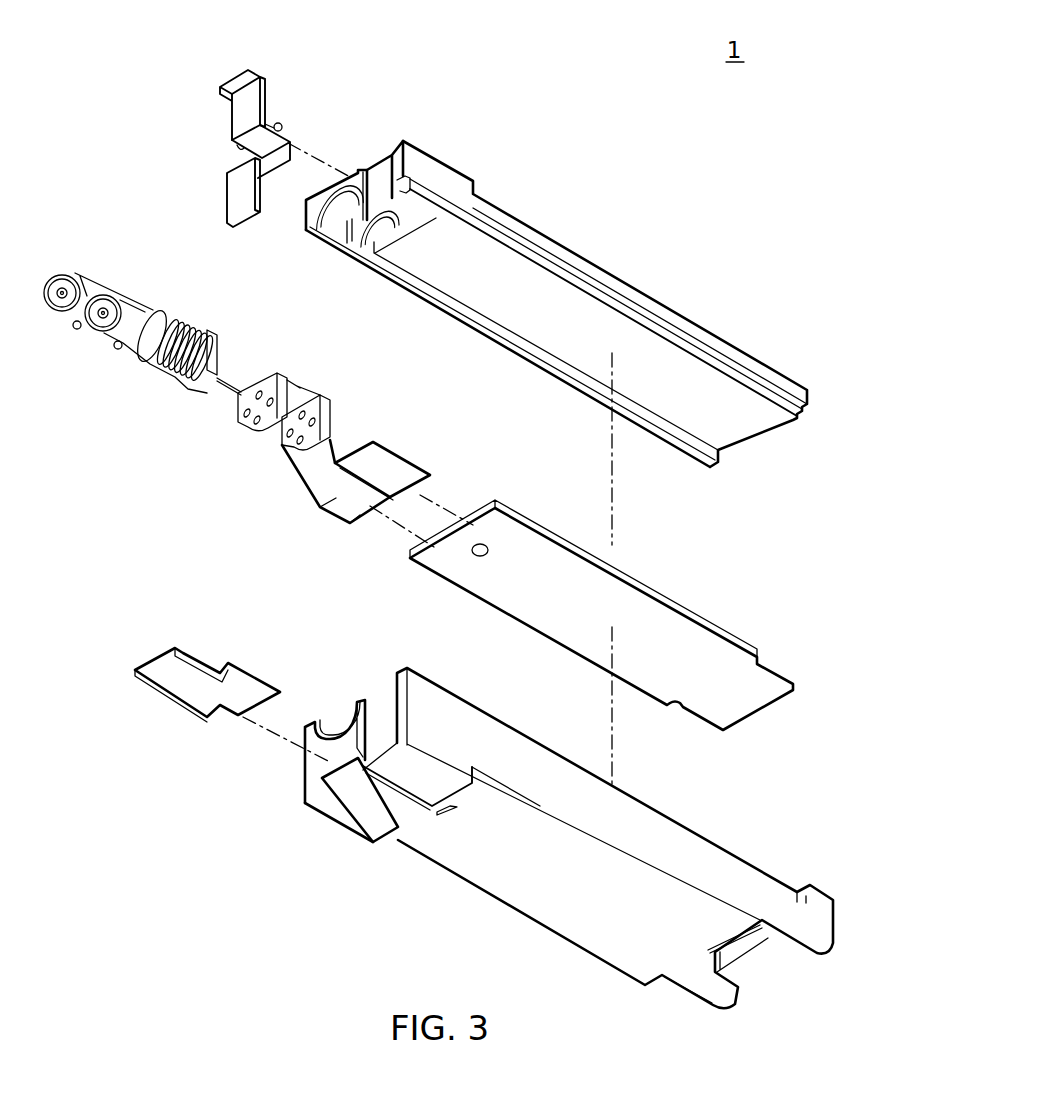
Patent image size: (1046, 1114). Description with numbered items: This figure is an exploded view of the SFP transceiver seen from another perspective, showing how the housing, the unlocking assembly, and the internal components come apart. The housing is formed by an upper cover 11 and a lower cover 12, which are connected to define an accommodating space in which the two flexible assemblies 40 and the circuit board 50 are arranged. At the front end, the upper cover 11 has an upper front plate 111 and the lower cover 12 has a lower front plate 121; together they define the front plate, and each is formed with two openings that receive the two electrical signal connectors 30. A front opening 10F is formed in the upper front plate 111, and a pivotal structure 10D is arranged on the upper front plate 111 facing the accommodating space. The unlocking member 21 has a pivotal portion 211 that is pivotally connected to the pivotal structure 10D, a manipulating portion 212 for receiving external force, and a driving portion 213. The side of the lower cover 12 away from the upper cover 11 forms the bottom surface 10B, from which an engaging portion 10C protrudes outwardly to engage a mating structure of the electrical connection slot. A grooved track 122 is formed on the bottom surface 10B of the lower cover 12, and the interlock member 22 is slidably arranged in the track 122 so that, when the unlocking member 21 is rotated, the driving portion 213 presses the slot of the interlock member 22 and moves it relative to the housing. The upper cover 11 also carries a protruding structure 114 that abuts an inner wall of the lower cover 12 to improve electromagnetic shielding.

The upper cover 11 is at (524, 279).
The lower cover 12 is at (529, 838).
The unlocking member 21 is at (228, 122).
The interlock member 22 is at (193, 698).
The electrical signal connector 30 is at (139, 282).
The flexible assembly 40 is at (388, 416).
The circuit board 50 is at (650, 612).
The upper front plate 111 is at (313, 208).
The protruding structure 114 is at (526, 257).
The lower front plate 121 is at (325, 752).
The track 122 is at (356, 799).
The pivotal portion 211 is at (280, 123).
The manipulating portion 212 is at (236, 76).
The driving portion 213 is at (237, 197).
The bottom surface 10B is at (377, 832).
The engaging portion 10C is at (445, 824).
The pivotal structure 10D is at (408, 189).
The front opening 10F is at (382, 183).